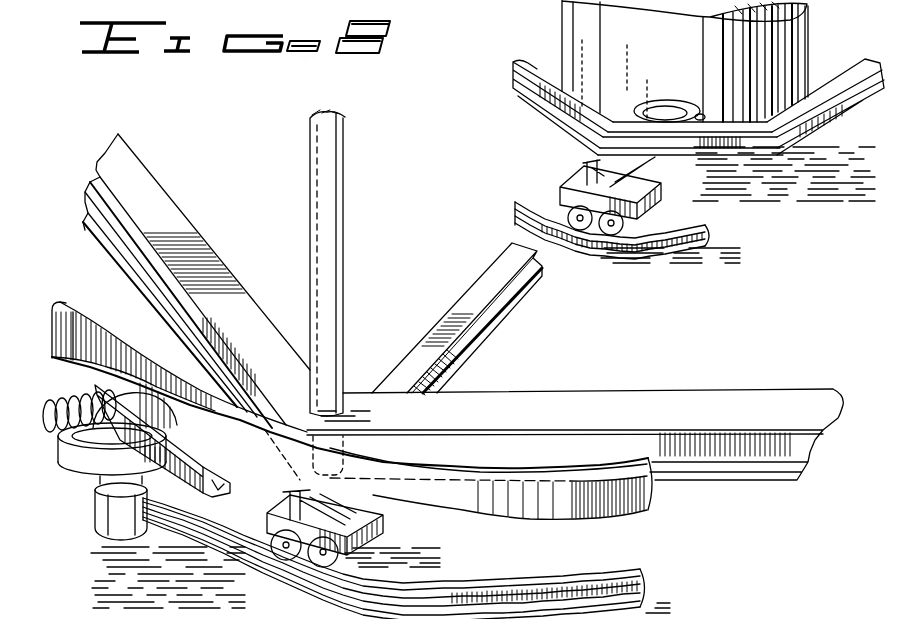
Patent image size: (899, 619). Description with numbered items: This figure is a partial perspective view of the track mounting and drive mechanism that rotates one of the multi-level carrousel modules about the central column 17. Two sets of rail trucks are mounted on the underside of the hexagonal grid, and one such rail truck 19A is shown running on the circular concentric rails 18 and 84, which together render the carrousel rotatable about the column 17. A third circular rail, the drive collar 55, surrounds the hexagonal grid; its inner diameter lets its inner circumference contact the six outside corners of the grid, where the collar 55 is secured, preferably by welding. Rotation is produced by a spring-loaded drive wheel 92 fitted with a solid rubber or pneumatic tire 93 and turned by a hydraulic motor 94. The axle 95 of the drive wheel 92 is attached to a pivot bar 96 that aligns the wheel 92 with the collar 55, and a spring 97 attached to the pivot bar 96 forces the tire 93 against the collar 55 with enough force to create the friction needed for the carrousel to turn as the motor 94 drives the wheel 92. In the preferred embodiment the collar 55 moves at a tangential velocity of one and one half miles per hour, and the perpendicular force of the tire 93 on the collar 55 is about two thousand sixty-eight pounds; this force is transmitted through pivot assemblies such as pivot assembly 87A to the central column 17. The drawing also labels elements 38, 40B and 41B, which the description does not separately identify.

The column 17 is at (808, 47).
The pivot assembly 87A is at (676, 112).
The V-shaped guide plate 40B is at (811, 130).
The circular concentric rail 84 is at (656, 248).
The upright post 38 is at (344, 305).
The inclined rail 41B is at (477, 345).
The drive collar 55 is at (523, 518).
The circular concentric rail 18 is at (517, 564).
The rail truck 19A is at (363, 540).
The drive wheel 92 is at (99, 446).
The tire 93 is at (58, 457).
The hydraulic motor 94 is at (95, 493).
The axle 95 is at (163, 395).
The pivot bar 96 is at (216, 488).
The spring 97 is at (65, 398).